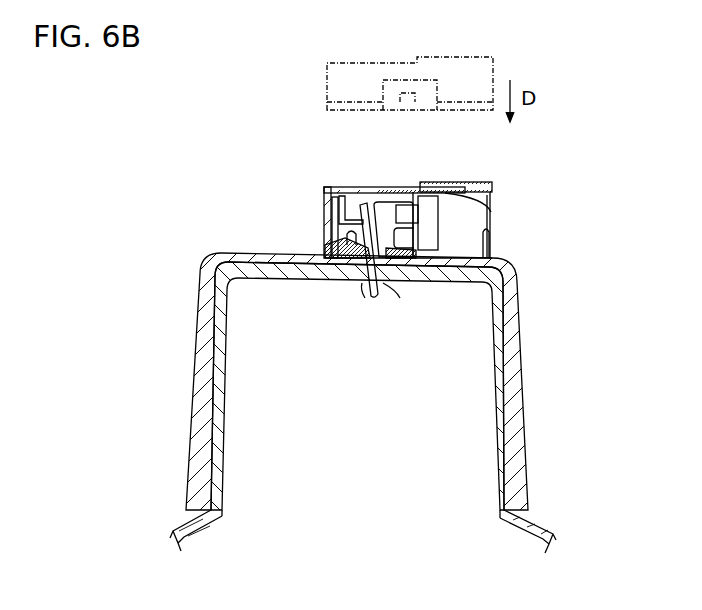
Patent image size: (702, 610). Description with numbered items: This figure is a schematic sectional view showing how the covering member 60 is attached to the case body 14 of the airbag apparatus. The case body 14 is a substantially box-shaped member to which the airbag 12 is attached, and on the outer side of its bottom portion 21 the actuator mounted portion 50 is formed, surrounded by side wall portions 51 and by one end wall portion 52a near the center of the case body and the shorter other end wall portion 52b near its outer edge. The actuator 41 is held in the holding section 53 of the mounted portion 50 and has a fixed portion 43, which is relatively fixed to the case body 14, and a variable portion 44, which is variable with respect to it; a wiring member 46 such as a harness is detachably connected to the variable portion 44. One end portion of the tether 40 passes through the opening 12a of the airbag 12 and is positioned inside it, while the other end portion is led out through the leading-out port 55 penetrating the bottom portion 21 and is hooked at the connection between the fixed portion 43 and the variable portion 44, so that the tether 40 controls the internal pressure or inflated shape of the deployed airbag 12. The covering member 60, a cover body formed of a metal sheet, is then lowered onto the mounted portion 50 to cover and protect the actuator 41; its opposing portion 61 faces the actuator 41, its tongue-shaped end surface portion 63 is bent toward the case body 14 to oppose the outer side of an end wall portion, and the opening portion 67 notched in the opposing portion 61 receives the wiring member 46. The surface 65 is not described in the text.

The airbag 12 is at (541, 534).
The opening 12a is at (390, 290).
The case body 14 is at (523, 392).
The bottom portion 21 is at (247, 252).
The tether 40 is at (372, 295).
The actuator 41 is at (449, 214).
The fixed portion 43 is at (327, 188).
The variable portion 44 is at (408, 198).
The wiring member 46 is at (430, 193).
The actuator mounted portion 50 is at (340, 217).
The side wall portion 51 is at (493, 186).
The one end wall portion 52a is at (328, 243).
The other end wall portion 52b is at (490, 252).
The holding section 53 is at (350, 246).
The leading-out port 55 is at (385, 240).
The covering member 60 is at (413, 234).
The opposing portion 61 is at (336, 187).
The end surface portion 63 is at (333, 200).
The top surface 65 is at (375, 187).
The opening portion 67 is at (457, 183).